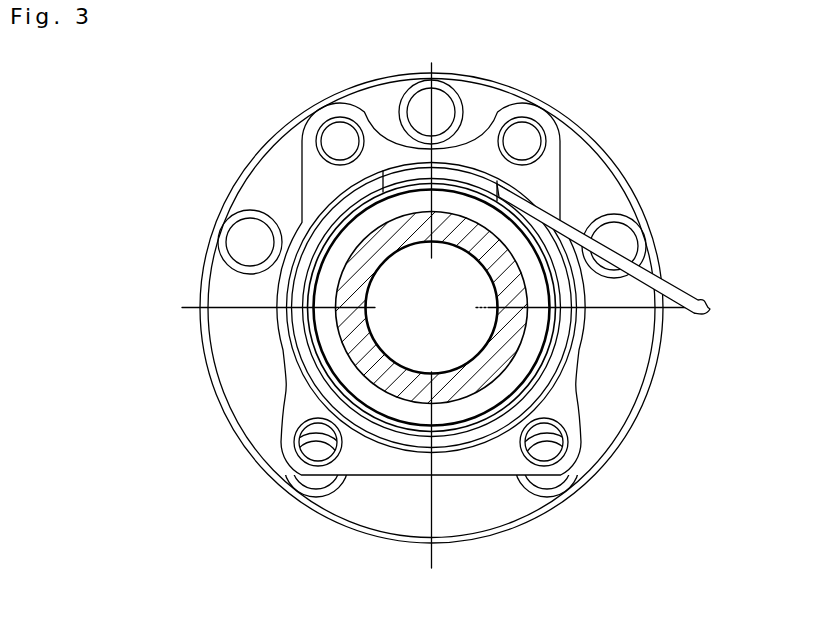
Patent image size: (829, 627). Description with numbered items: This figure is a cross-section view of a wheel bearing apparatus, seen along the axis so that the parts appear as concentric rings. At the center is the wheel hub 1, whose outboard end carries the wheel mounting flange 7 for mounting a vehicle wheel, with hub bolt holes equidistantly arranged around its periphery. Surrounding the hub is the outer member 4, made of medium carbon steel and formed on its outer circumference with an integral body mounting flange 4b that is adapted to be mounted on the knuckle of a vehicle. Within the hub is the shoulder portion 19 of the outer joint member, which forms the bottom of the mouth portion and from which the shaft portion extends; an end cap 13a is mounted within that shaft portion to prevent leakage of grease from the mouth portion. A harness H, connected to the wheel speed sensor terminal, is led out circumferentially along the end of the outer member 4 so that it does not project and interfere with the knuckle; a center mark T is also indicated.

The wheel hub 1 is at (242, 337).
The outer member 4 is at (542, 193).
The body mounting flange 4b is at (293, 413).
The wheel mounting flange 7 is at (277, 167).
The end cap 13a is at (452, 365).
The shoulder portion 19 is at (516, 317).
The harness H is at (637, 232).
The center mark T is at (429, 316).